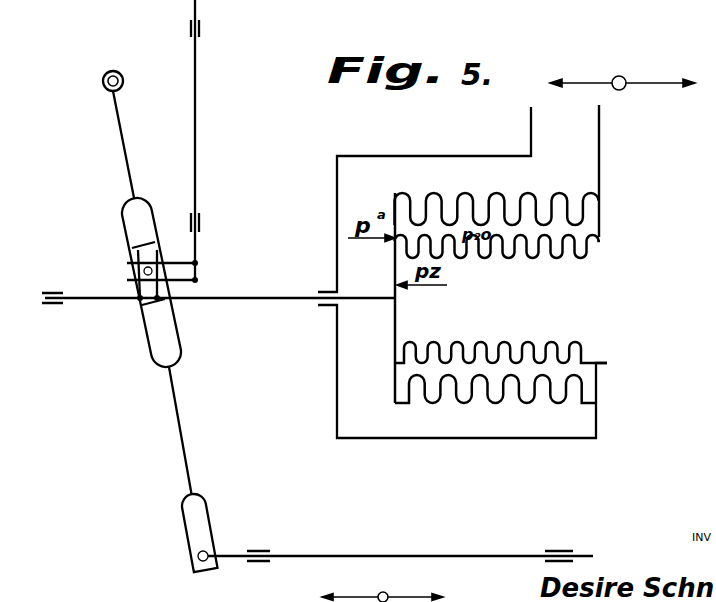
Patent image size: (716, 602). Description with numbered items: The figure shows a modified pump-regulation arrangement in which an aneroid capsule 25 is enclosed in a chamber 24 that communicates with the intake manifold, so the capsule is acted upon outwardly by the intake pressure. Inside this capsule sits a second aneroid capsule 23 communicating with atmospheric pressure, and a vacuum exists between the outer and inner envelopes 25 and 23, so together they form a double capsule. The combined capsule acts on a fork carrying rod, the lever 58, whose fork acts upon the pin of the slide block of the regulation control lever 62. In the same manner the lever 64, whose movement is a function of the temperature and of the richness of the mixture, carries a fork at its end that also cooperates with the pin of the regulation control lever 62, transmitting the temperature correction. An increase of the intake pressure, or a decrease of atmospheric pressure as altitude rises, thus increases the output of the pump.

The second aneroid capsule 23 is at (583, 343).
The chamber 24 is at (578, 150).
The aneroid capsule 25 is at (585, 209).
The lever 58 is at (98, 300).
The regulation control lever 62 is at (124, 148).
The lever 64 is at (197, 127).